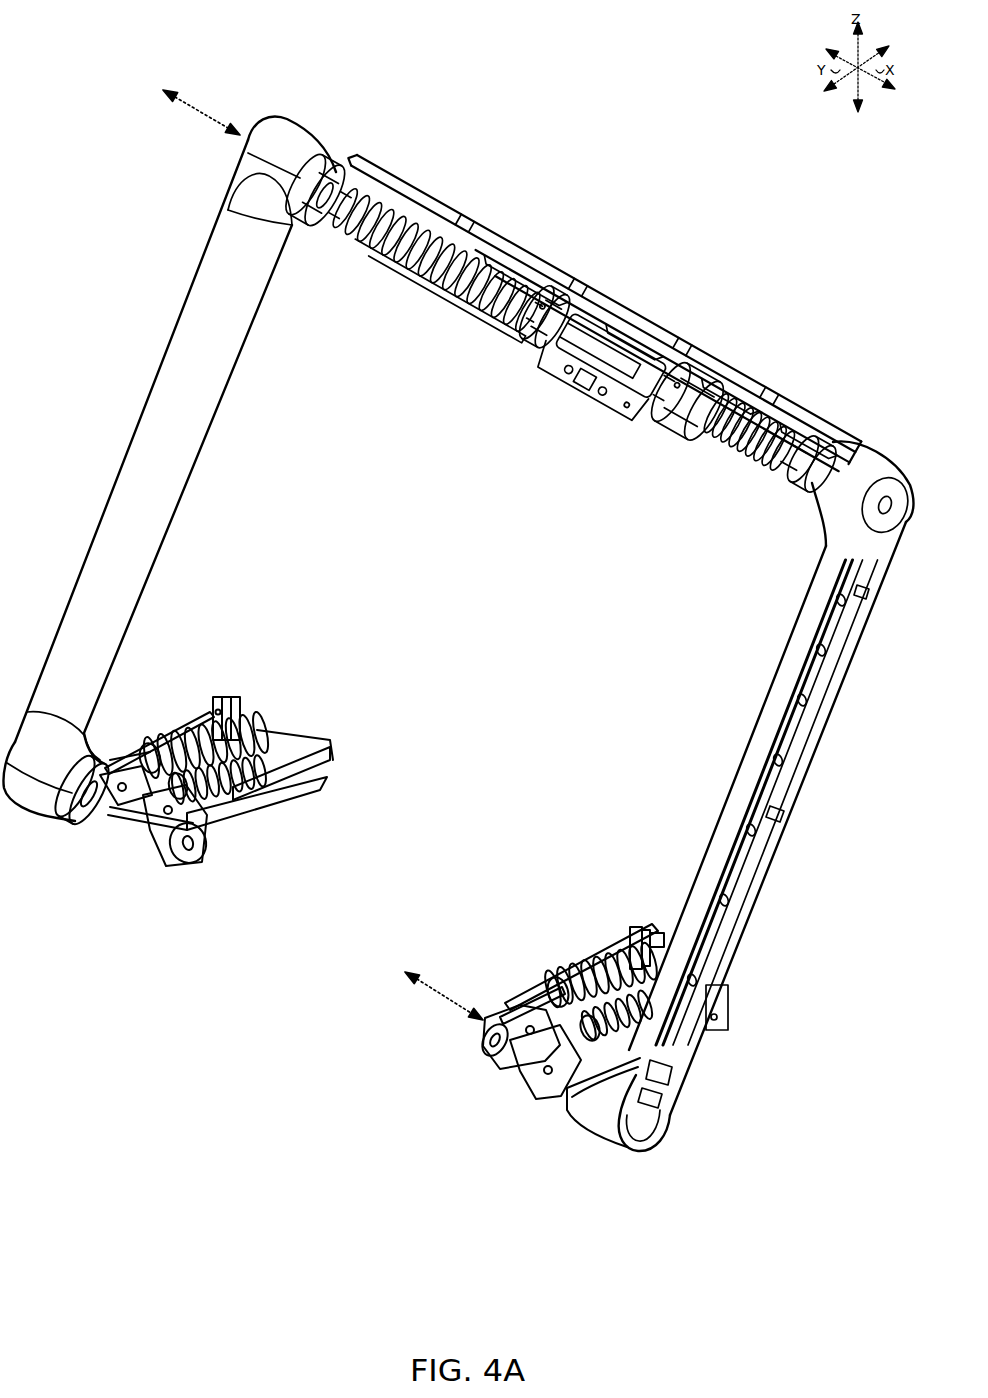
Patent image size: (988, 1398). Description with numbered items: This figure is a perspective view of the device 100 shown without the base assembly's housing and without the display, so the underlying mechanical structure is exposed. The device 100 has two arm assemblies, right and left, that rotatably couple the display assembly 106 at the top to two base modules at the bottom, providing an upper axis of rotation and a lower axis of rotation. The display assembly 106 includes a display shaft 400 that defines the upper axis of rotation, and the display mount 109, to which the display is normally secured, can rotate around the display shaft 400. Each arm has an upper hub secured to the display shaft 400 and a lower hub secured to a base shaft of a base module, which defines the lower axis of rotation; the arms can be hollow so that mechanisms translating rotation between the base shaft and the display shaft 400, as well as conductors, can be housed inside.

The device 100 is at (459, 590).
The display assembly 106 is at (596, 340).
The display mount 109 is at (520, 370).
The display shaft 400 is at (662, 392).